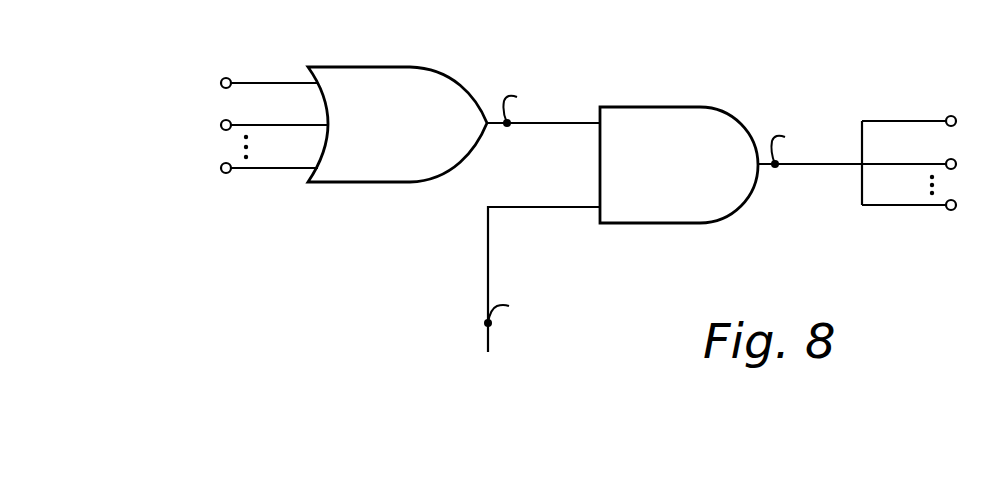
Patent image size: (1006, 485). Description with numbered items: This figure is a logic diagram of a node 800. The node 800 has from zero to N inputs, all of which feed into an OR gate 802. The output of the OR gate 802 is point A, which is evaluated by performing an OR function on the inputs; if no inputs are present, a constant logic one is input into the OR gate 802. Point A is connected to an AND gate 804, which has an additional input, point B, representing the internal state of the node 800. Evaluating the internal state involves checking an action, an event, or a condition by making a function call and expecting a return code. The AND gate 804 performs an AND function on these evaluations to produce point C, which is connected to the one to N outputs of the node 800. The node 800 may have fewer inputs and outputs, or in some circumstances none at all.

The node 800 is at (486, 432).
The OR gate 802 is at (419, 143).
The AND gate 804 is at (693, 183).